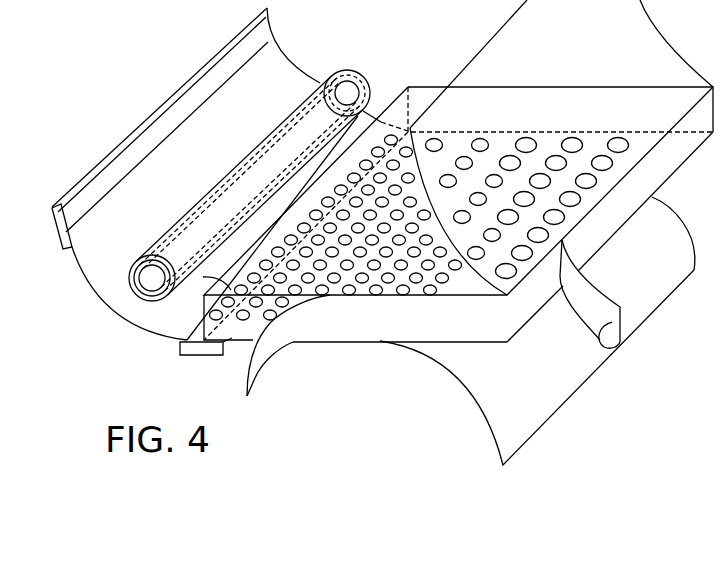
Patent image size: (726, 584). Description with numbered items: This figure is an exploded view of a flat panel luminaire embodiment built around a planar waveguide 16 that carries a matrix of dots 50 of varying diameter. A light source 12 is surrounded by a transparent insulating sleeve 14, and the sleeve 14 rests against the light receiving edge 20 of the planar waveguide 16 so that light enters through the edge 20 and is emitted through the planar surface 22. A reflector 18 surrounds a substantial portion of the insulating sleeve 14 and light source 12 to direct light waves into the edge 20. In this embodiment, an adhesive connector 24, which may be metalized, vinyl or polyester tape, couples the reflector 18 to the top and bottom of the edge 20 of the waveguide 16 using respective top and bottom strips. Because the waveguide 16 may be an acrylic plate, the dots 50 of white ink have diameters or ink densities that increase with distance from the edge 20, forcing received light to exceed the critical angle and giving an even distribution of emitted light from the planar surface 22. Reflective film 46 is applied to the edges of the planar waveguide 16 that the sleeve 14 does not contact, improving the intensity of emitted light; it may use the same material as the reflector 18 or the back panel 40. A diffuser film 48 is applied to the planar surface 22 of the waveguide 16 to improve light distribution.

The light source 12 is at (148, 283).
The transparent insulating sleeve 14 is at (352, 72).
The planar waveguide 16 is at (383, 263).
The reflector 18 is at (93, 248).
The edge 20 is at (203, 277).
The planar surface 22 is at (421, 215).
The adhesive connector 24 is at (53, 212).
The back panel 40 is at (527, 420).
The reflective film 46 is at (255, 370).
The diffuser film 48 is at (640, 18).
The matrix of dots 50 is at (527, 143).